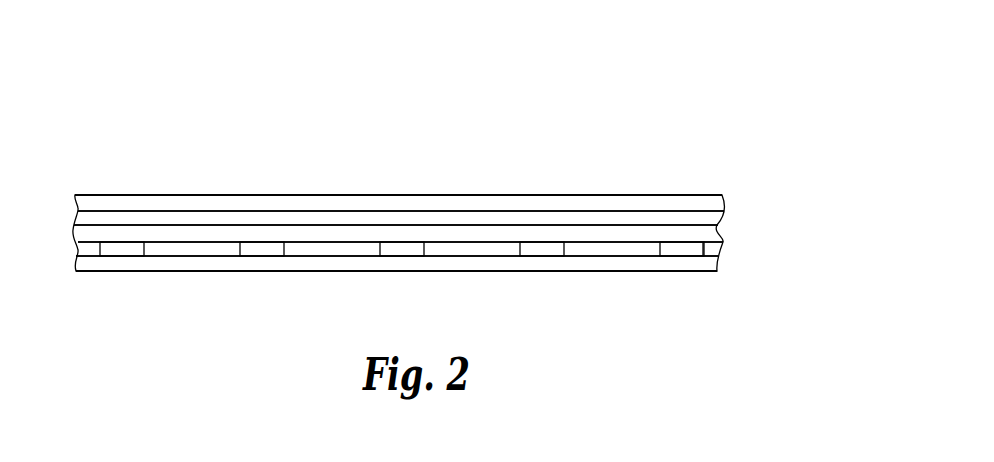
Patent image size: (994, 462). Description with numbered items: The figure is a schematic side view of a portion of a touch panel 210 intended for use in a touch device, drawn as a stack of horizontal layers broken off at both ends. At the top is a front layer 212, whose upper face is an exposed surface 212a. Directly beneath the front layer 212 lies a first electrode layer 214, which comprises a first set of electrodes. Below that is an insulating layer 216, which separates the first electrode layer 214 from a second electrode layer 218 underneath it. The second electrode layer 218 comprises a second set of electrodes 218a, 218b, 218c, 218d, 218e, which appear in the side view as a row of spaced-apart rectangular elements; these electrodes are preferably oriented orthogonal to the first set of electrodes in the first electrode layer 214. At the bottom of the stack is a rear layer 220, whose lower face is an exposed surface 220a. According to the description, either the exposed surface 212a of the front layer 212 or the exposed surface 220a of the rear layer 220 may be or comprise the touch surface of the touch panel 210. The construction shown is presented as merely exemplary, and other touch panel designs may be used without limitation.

The touch panel 210 is at (739, 128).
The front layer 212 is at (673, 202).
The exposed surface 212a is at (540, 186).
The first electrode layer 214 is at (730, 208).
The insulating layer 216 is at (716, 230).
The second electrode layer 218 is at (721, 248).
The electrode 218a is at (124, 248).
The electrode 218b is at (263, 248).
The electrode 218c is at (400, 248).
The electrode 218d is at (543, 248).
The electrode 218e is at (686, 248).
The rear layer 220 is at (719, 263).
The exposed surface 220a is at (187, 275).